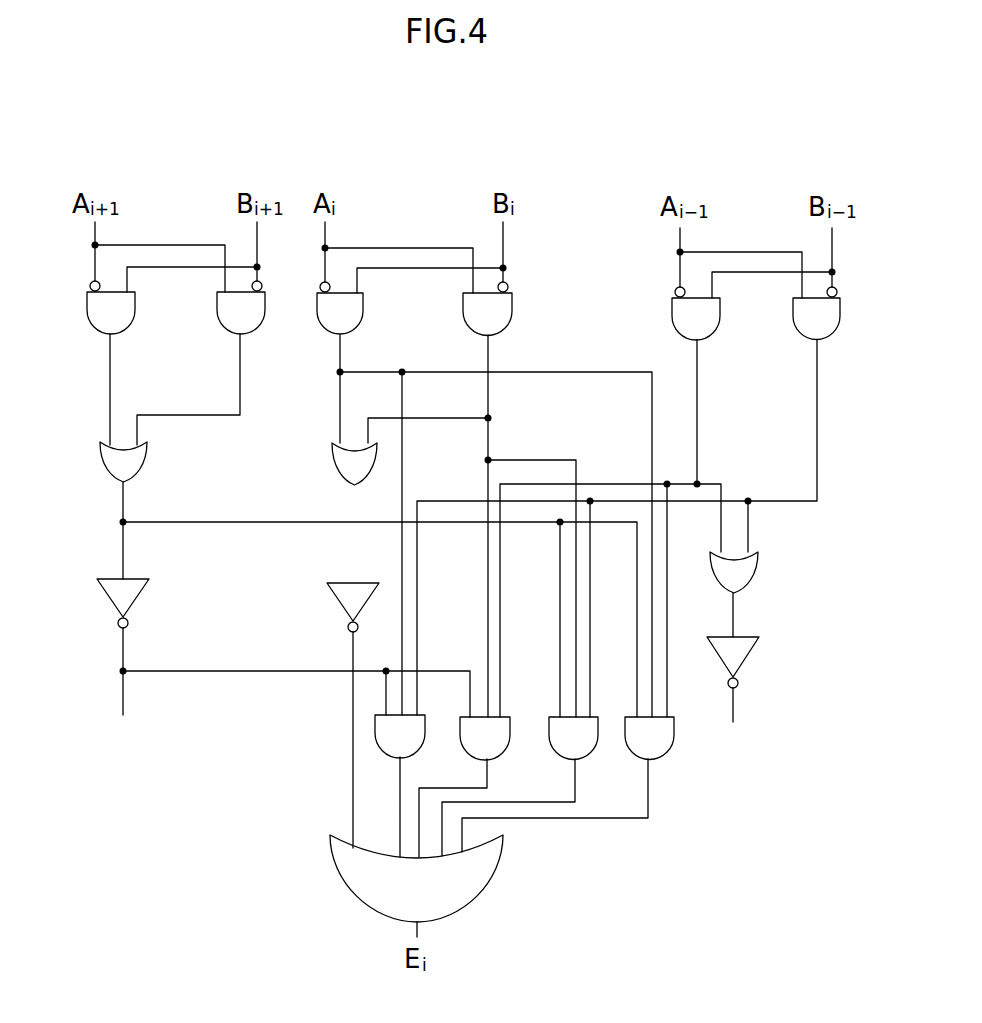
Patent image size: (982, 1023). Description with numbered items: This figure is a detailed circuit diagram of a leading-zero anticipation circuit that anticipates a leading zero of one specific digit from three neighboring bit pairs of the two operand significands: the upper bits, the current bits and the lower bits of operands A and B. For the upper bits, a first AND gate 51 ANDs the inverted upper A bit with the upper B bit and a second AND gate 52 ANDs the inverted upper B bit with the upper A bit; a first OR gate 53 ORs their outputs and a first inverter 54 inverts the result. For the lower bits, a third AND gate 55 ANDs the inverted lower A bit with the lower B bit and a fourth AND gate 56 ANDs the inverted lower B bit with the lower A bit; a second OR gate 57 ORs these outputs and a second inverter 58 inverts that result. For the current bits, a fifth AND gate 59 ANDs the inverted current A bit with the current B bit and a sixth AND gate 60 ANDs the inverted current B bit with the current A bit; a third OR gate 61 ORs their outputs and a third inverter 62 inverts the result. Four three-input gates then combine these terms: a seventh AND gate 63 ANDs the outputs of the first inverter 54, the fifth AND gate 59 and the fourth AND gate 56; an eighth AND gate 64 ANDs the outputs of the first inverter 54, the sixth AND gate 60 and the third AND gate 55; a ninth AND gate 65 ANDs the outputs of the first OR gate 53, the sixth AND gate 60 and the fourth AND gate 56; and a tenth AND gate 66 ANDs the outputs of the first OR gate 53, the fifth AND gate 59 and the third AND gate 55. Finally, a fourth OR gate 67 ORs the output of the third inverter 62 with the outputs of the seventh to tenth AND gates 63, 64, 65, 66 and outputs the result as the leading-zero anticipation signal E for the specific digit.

The first AND gate 51 is at (85, 324).
The second AND gate 52 is at (218, 324).
The first OR gate 53 is at (101, 462).
The first inverter 54 is at (104, 598).
The third AND gate 55 is at (673, 330).
The fourth AND gate 56 is at (794, 330).
The second OR gate 57 is at (757, 573).
The second inverter 58 is at (745, 665).
The fifth AND gate 59 is at (318, 325).
The sixth AND gate 60 is at (464, 325).
The third OR gate 61 is at (331, 465).
The third inverter 62 is at (335, 601).
The seventh AND gate 63 is at (355, 742).
The eighth AND gate 64 is at (497, 762).
The ninth AND gate 65 is at (585, 762).
The tenth AND gate 66 is at (660, 762).
The fourth OR gate 67 is at (340, 867).